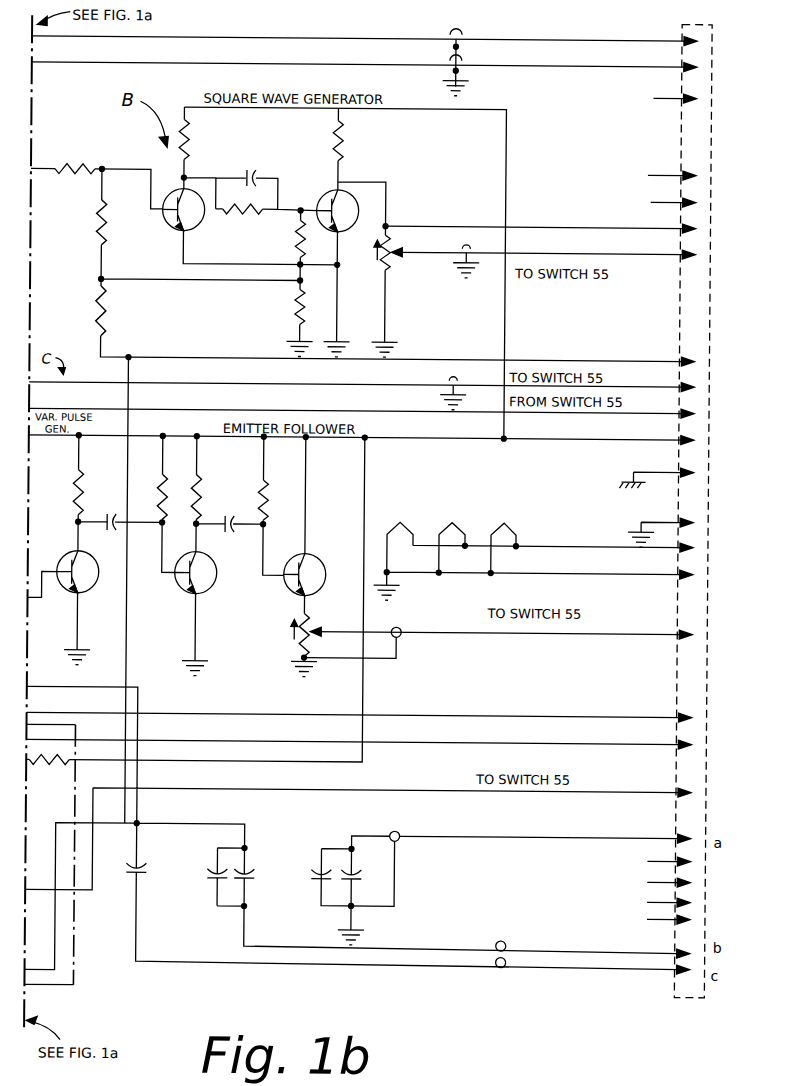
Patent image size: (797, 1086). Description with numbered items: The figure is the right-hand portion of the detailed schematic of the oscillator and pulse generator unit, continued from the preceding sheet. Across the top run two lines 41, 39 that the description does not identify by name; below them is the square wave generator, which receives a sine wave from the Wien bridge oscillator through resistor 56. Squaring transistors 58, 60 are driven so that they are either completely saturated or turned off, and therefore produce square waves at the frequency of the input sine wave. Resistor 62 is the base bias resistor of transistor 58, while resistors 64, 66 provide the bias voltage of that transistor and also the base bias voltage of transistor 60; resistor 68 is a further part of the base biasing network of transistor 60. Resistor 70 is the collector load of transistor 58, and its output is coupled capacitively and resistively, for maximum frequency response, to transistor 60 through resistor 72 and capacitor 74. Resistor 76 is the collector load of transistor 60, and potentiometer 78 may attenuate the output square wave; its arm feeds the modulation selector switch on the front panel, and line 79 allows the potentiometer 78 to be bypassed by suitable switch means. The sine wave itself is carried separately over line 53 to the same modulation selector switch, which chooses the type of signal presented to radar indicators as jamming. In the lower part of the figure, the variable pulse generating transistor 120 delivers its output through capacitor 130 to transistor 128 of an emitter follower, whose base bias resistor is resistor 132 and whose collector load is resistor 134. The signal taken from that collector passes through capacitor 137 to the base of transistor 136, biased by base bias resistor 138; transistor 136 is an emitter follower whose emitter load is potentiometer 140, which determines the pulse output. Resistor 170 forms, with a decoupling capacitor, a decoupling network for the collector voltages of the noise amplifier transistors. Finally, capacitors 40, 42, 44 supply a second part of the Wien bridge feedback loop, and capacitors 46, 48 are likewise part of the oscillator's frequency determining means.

The conductor 41 is at (330, 36).
The conductor 39 is at (166, 66).
The resistor 56 is at (73, 170).
The squaring transistor 58 is at (161, 224).
The squaring transistor 60 is at (320, 194).
The base bias resistor 62 is at (90, 224).
The resistor 64 is at (92, 306).
The resistor 66 is at (292, 300).
The resistor 68 is at (296, 236).
The collector load resistor 70 is at (188, 144).
The resistor 72 is at (260, 220).
The capacitor 74 is at (246, 174).
The collector load resistor 76 is at (343, 144).
The potentiometer 78 is at (375, 254).
The line 79 is at (437, 225).
The line 53 is at (388, 383).
The variable pulse generating transistor 120 is at (92, 590).
The emitter follower transistor 128 is at (203, 590).
The capacitor 130 is at (110, 508).
The base bias resistor 132 is at (158, 483).
The collector load resistor 134 is at (200, 488).
The emitter follower transistor 136 is at (316, 572).
The capacitor 137 is at (248, 538).
The base bias resistor 138 is at (258, 502).
The potentiometer 140 is at (297, 632).
The resistor 170 is at (63, 770).
The capacitor 40 is at (144, 878).
The capacitor 42 is at (204, 873).
The capacitor 44 is at (253, 876).
The capacitor 46 is at (310, 872).
The capacitor 48 is at (384, 882).